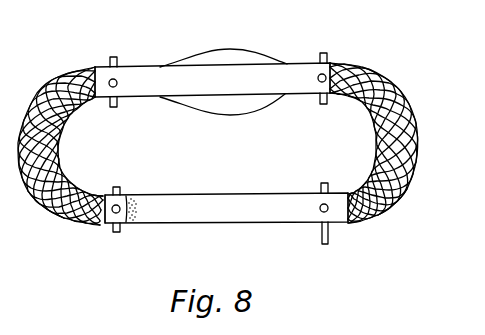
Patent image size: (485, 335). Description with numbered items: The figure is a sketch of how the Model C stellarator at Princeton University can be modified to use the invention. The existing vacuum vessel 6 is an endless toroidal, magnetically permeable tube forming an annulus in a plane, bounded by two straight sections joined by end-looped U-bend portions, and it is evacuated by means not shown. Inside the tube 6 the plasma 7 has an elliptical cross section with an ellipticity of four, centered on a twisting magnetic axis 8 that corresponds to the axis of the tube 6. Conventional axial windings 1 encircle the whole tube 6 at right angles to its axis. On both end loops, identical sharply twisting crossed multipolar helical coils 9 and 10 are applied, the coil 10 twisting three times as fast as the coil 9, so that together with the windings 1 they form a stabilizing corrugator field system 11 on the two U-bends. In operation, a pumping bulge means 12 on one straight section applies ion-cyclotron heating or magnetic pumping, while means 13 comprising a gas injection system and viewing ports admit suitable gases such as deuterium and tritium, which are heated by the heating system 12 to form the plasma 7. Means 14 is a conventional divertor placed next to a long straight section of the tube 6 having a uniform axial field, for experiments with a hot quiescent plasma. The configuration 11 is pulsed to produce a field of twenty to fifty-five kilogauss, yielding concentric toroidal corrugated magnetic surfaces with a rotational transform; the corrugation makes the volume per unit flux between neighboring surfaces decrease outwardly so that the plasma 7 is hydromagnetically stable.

The axial windings 1 is at (84, 68).
The vacuum vessel 6 is at (236, 224).
The plasma 7 is at (142, 195).
The magnetic axis 8 is at (134, 216).
The crossed multipolar helical coil 9 is at (40, 106).
The crossed multipolar helical coil 10 is at (63, 80).
The stabilizing corrugator field system 11 is at (47, 212).
The pumping bulge means 12 is at (207, 49).
The gas injection system and viewing ports 13 is at (113, 55).
The divertor 14 is at (329, 245).